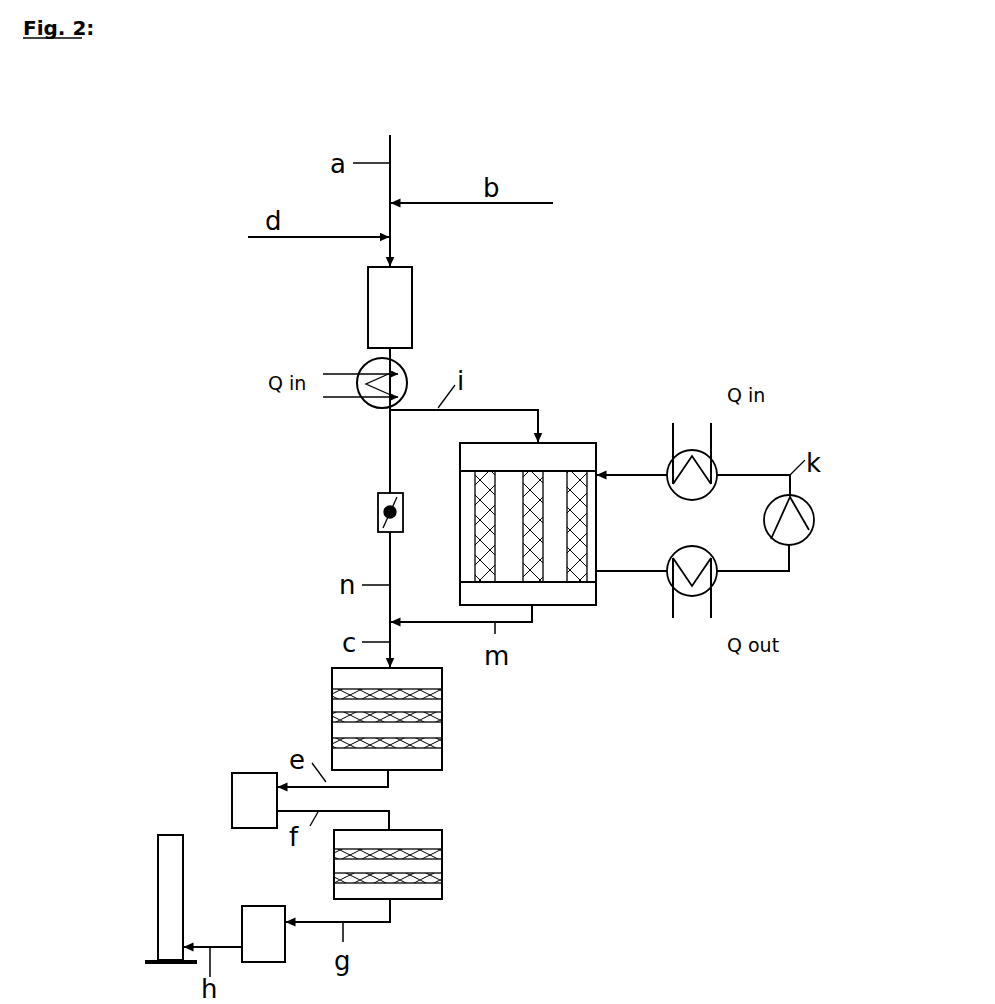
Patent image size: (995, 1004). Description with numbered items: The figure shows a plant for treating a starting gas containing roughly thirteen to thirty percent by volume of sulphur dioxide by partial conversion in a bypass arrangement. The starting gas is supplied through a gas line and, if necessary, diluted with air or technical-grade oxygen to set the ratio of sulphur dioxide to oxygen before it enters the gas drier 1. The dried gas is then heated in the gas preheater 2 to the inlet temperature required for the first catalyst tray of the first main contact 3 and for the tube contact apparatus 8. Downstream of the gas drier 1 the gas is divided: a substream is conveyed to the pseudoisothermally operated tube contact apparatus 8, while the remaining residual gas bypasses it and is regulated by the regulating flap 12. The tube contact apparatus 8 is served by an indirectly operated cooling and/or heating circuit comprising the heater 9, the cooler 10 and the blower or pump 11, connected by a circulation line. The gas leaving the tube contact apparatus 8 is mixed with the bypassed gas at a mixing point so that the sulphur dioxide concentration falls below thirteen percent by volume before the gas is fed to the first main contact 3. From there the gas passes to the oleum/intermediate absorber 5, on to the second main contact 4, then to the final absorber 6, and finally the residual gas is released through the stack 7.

The gas drier 1 is at (412, 298).
The gas preheater 2 is at (367, 362).
The first main contact 3 is at (442, 717).
The second main contact 4 is at (442, 863).
The oleum/intermediate absorber 5 is at (251, 773).
The final absorber 6 is at (262, 906).
The stack 7 is at (158, 905).
The tube contact apparatus 8 is at (596, 462).
The heater 9 is at (718, 462).
The cooler 10 is at (720, 585).
The blower/pump 11 is at (815, 520).
The regulating flap 12 is at (378, 510).